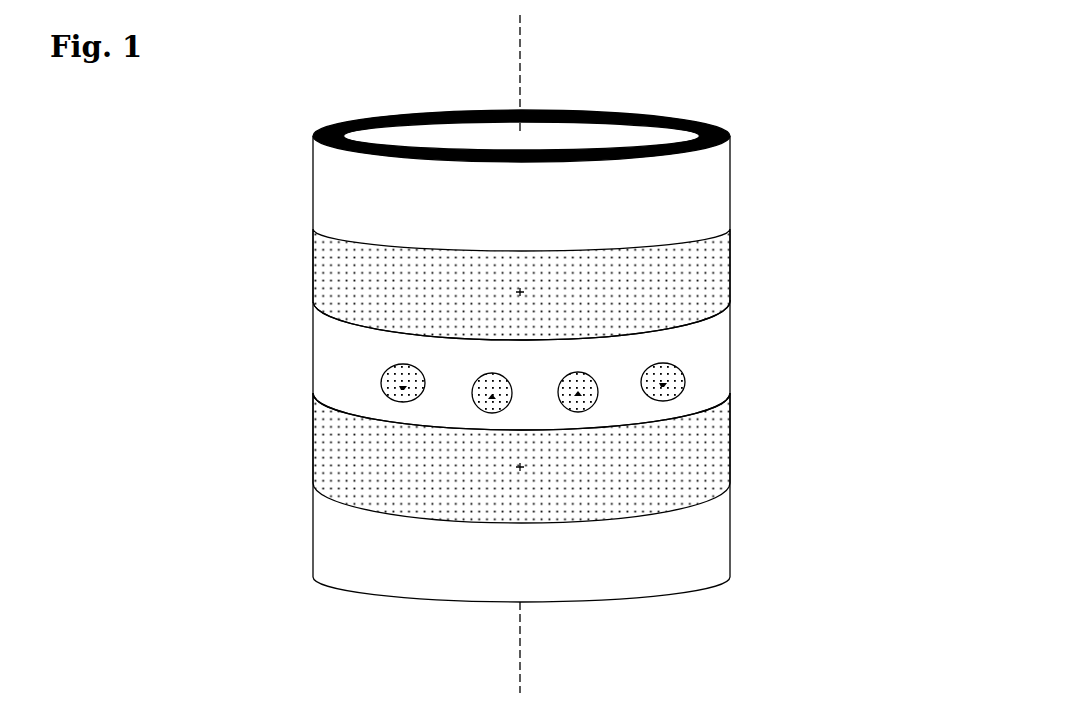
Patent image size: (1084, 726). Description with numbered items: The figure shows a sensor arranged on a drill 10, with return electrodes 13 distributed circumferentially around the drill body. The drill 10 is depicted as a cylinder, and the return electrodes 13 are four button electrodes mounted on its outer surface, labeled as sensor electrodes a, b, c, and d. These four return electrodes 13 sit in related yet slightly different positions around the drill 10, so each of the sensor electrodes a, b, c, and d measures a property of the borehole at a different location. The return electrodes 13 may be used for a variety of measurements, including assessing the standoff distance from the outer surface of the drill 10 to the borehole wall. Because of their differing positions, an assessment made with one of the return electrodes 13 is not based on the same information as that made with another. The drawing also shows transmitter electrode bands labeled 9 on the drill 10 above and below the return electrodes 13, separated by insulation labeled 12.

The drill 10 is at (715, 170).
The transmitter electrode 9 is at (718, 250).
The insulation 12 is at (713, 327).
The return electrodes 13 is at (638, 392).
The sensor electrode a is at (388, 370).
The sensor electrode b is at (483, 373).
The sensor electrode c is at (570, 373).
The sensor electrode d is at (645, 373).